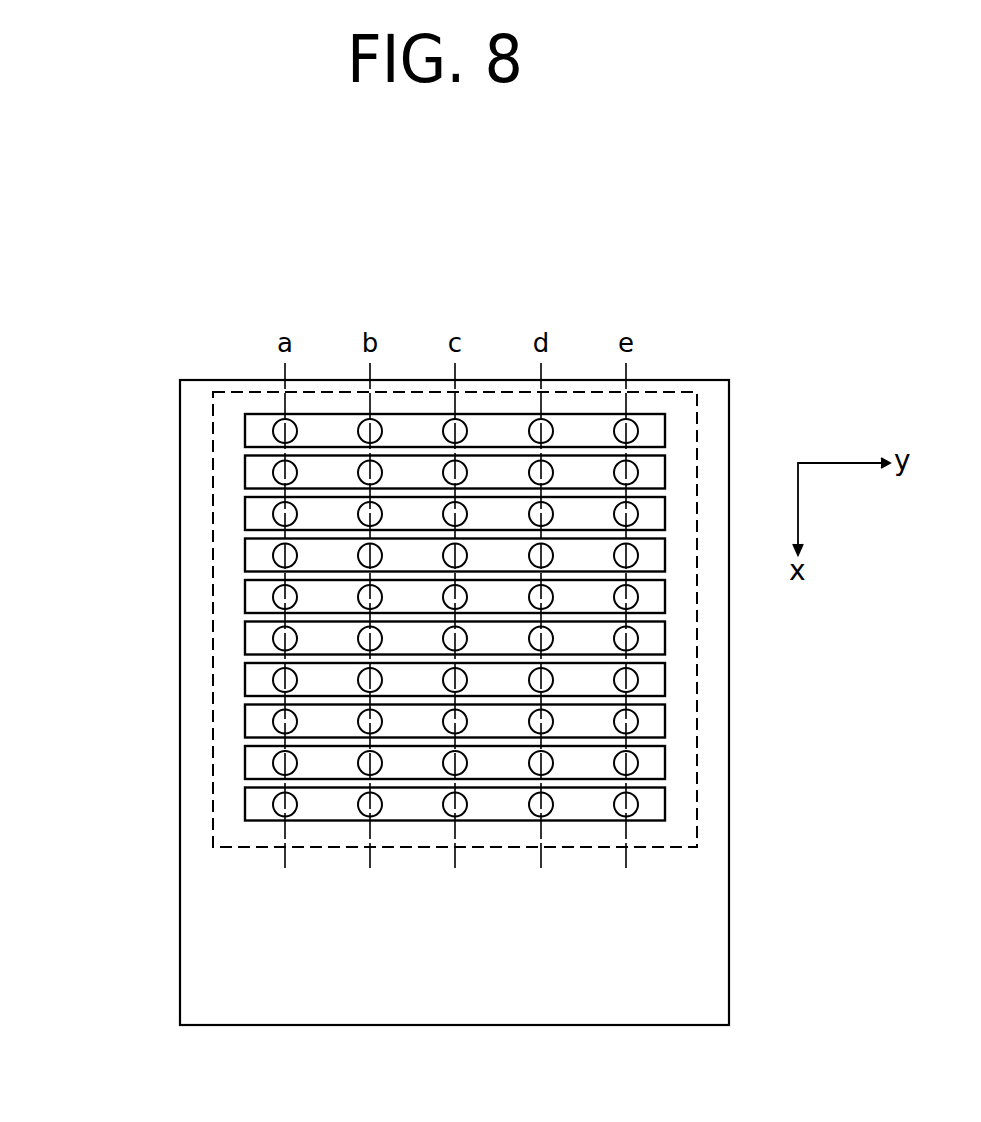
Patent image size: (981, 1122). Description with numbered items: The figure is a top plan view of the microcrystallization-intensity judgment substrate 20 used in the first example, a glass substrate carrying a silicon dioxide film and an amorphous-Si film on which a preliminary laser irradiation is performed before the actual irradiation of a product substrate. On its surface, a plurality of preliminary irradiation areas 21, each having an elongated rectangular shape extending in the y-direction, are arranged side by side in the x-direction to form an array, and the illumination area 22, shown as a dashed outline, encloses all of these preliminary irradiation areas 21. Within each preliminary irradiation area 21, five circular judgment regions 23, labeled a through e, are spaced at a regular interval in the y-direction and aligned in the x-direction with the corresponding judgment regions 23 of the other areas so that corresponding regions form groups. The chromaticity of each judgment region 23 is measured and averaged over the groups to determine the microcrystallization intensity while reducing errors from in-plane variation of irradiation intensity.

The microcrystallization-intensity judgment substrate 20 is at (180, 950).
The preliminary irradiation area 21 is at (245, 672).
The illumination area 22 is at (213, 410).
The judgment region 23 is at (275, 512).